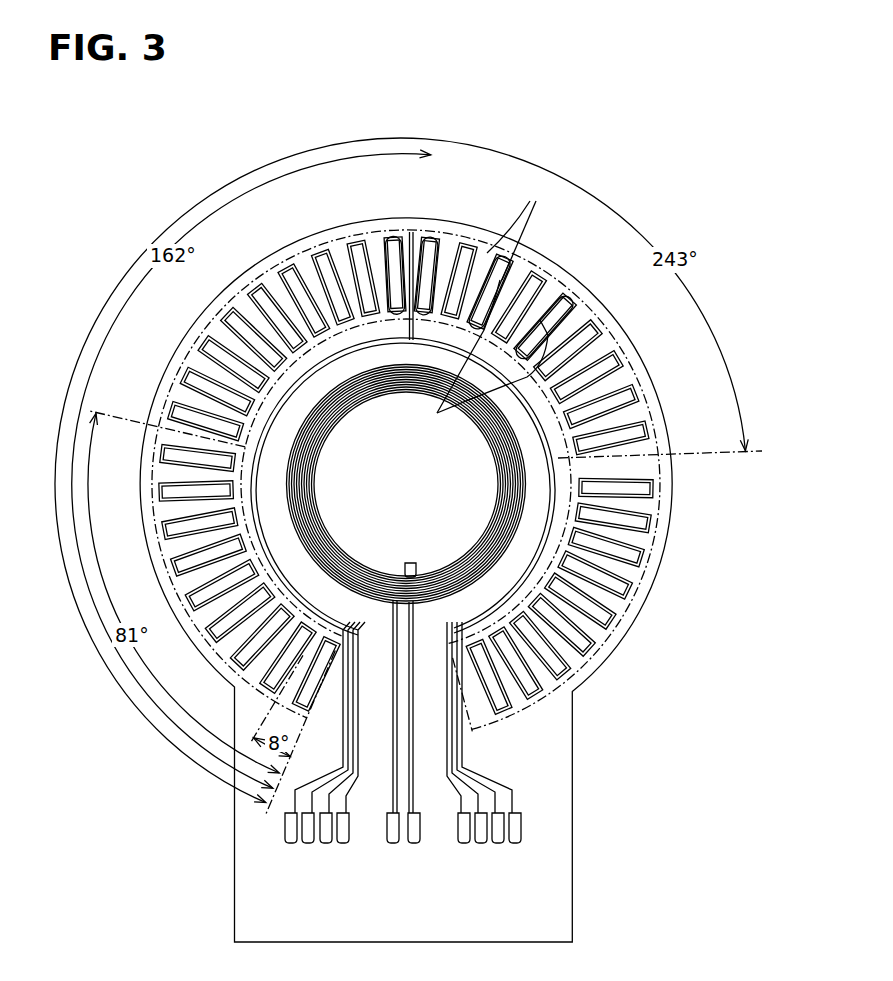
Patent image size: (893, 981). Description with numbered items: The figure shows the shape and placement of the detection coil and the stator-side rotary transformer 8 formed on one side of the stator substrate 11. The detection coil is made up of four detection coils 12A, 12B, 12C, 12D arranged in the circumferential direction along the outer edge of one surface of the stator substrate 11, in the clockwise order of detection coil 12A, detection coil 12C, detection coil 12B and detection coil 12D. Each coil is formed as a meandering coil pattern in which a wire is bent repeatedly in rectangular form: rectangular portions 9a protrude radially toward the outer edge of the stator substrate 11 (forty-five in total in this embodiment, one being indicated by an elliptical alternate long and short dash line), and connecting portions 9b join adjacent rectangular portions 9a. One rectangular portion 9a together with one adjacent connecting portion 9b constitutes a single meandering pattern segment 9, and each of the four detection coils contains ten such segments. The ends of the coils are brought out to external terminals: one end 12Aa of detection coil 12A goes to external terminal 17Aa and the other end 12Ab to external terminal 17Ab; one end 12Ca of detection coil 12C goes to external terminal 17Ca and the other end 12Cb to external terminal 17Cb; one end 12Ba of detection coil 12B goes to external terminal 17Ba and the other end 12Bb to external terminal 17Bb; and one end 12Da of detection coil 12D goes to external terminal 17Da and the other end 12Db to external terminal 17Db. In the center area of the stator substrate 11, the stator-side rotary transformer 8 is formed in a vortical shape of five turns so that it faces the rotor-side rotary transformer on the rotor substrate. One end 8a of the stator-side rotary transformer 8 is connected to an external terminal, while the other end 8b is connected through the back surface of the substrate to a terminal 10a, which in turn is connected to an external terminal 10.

The stator-side rotary transformer 8 is at (492, 444).
The one end of the stator-side rotary transformer 8a is at (389, 607).
The other end of the stator-side rotary transformer 8b is at (410, 563).
The meandering pattern segment 9 is at (400, 880).
The rectangular portion 9a is at (497, 262).
The connecting portion 9b is at (484, 362).
The external terminal 10 is at (415, 843).
The terminal 10a is at (417, 615).
The stator substrate 11 is at (604, 668).
The detection coil 12A is at (239, 571).
The detection coil 12B is at (572, 317).
The detection coil 12C is at (251, 310).
The detection coil 12D is at (587, 592).
The one end of the detection coil 12A 12Aa is at (338, 625).
The other end of the detection coil 12A 12Ab is at (237, 462).
The one end of the detection coil 12B 12Ba is at (431, 236).
The other end of the detection coil 12B 12Bb is at (583, 442).
The one end of the detection coil 12C 12Ca is at (238, 430).
The other end of the detection coil 12C 12Cb is at (401, 234).
The one end of the detection coil 12D 12Da is at (582, 480).
The other end of the detection coil 12D 12Db is at (467, 627).
The external terminal 17Aa is at (292, 843).
The external terminal 17Ab is at (308, 843).
The external terminal 17Ba is at (464, 843).
The external terminal 17Bb is at (482, 843).
The external terminal 17Ca is at (326, 843).
The external terminal 17Cb is at (343, 843).
The external terminal 17Da is at (497, 843).
The external terminal 17Db is at (513, 843).